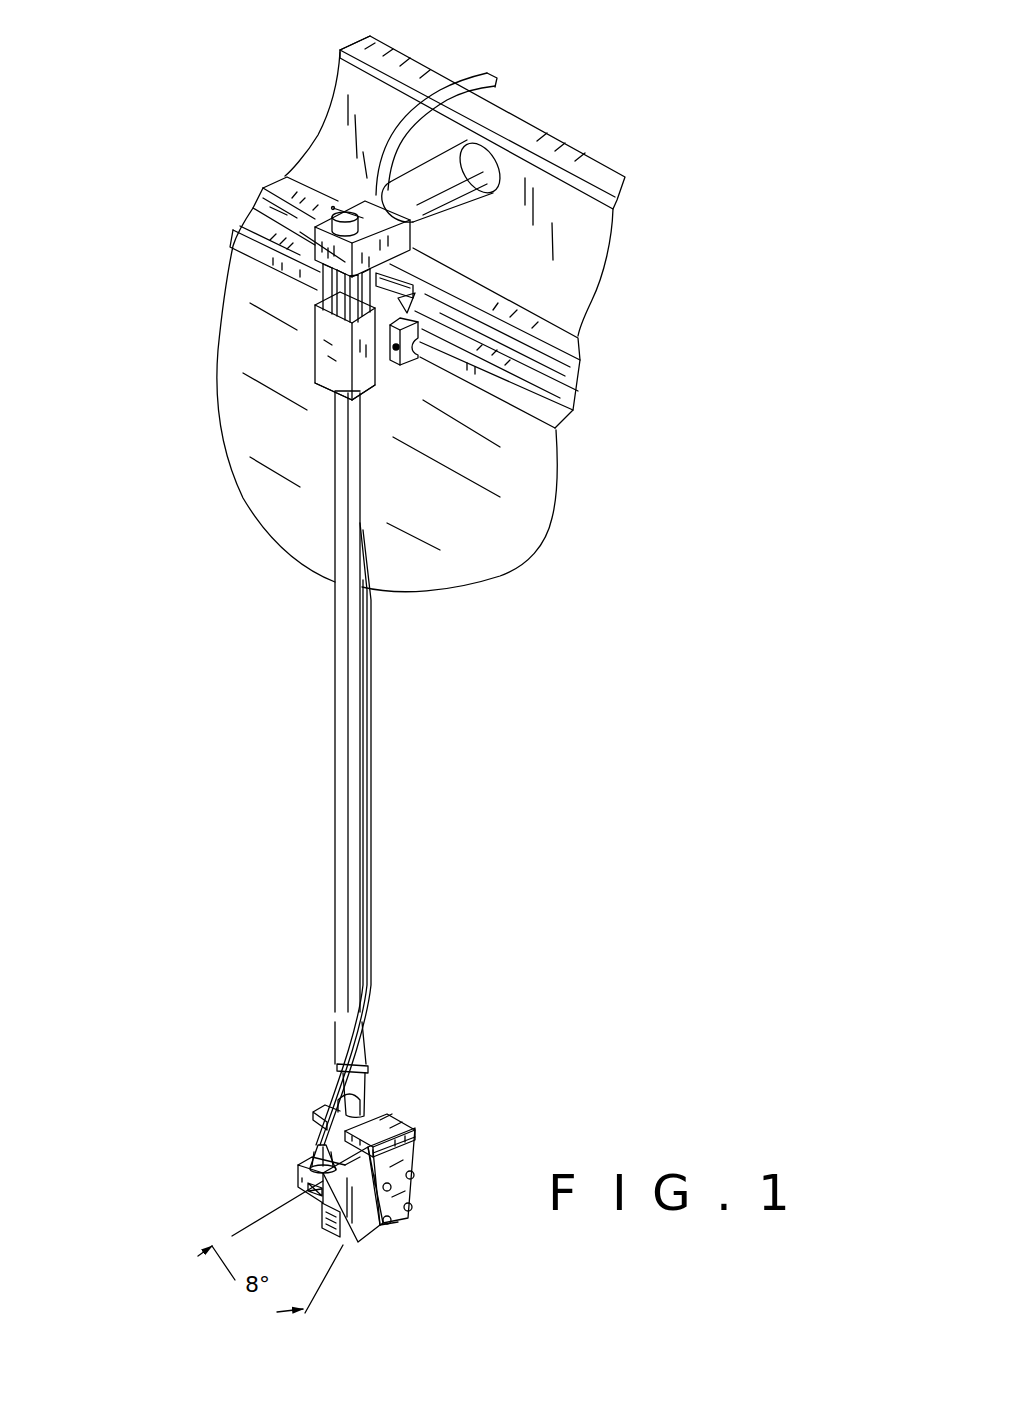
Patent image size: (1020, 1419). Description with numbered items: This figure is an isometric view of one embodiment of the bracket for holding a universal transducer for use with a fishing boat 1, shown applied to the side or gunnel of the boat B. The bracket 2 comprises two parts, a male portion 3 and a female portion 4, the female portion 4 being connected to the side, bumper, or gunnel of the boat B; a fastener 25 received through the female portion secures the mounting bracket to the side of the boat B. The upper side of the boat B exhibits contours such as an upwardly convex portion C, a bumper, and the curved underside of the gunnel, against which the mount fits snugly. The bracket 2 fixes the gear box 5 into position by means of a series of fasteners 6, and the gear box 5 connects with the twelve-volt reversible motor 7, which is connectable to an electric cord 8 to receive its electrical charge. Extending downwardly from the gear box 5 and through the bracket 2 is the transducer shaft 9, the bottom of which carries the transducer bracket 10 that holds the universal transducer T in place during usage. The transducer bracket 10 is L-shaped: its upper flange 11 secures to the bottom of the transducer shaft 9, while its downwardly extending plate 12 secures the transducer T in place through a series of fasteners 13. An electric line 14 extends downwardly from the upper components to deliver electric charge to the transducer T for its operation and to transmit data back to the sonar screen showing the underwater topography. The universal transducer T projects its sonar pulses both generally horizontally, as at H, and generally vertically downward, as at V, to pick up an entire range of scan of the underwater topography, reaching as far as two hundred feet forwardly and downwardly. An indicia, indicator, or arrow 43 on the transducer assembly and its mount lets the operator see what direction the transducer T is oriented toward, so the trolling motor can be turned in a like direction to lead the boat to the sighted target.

The bracket for holding universal transducer 1 is at (232, 655).
The bracket 2 is at (330, 350).
The male portion 3 is at (343, 382).
The female portion 4 is at (397, 366).
The gear box 5 is at (314, 240).
The fasteners 6 is at (320, 290).
The 12-volt reversable motor 7 is at (458, 162).
The electric cord 8 is at (478, 70).
The transducer shaft 9 is at (347, 723).
The transducer bracket 10 is at (432, 1132).
The upper flange 11 is at (383, 1122).
The downwardly extending plate 12 is at (403, 1190).
The fasteners 13 is at (390, 1227).
The electric line 14 is at (367, 835).
The fastener 25 is at (423, 336).
The indicator 43 is at (333, 207).
The boat B is at (581, 362).
The upwardly convex portion C is at (574, 300).
The universal transducer T is at (302, 1162).
The horizontal sonar projection H is at (267, 1210).
The vertical sonar projection V is at (332, 1276).